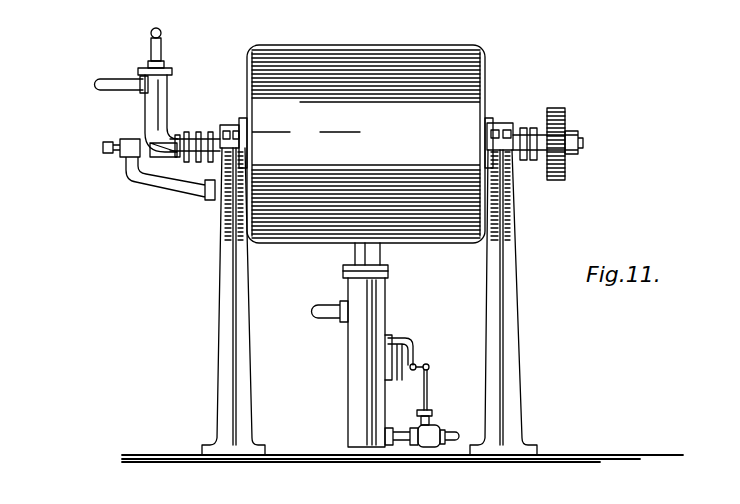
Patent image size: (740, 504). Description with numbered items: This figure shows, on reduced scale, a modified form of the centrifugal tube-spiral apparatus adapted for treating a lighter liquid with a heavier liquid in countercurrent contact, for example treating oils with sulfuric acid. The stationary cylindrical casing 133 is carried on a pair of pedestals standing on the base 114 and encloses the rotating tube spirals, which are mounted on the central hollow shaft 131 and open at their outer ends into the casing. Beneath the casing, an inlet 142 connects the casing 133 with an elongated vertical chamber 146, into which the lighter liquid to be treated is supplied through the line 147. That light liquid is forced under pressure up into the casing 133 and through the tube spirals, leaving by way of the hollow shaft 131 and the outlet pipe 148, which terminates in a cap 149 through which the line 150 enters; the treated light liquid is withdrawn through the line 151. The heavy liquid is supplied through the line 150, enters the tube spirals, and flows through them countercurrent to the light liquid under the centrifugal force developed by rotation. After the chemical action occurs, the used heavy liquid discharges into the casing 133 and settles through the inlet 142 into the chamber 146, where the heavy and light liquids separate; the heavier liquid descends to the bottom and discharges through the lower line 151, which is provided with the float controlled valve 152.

The cylindrical casing 133 is at (366, 144).
The base floor 114 is at (402, 313).
The hollow shaft 131 is at (214, 134).
The outlet pipe 148 is at (163, 99).
The cap 149 is at (166, 69).
The line 150 is at (150, 44).
The line 151 is at (119, 92).
The inlet 142 is at (372, 255).
The elongated chamber 146 is at (355, 380).
The line 147 is at (318, 304).
The float controlled valve 152 is at (432, 441).